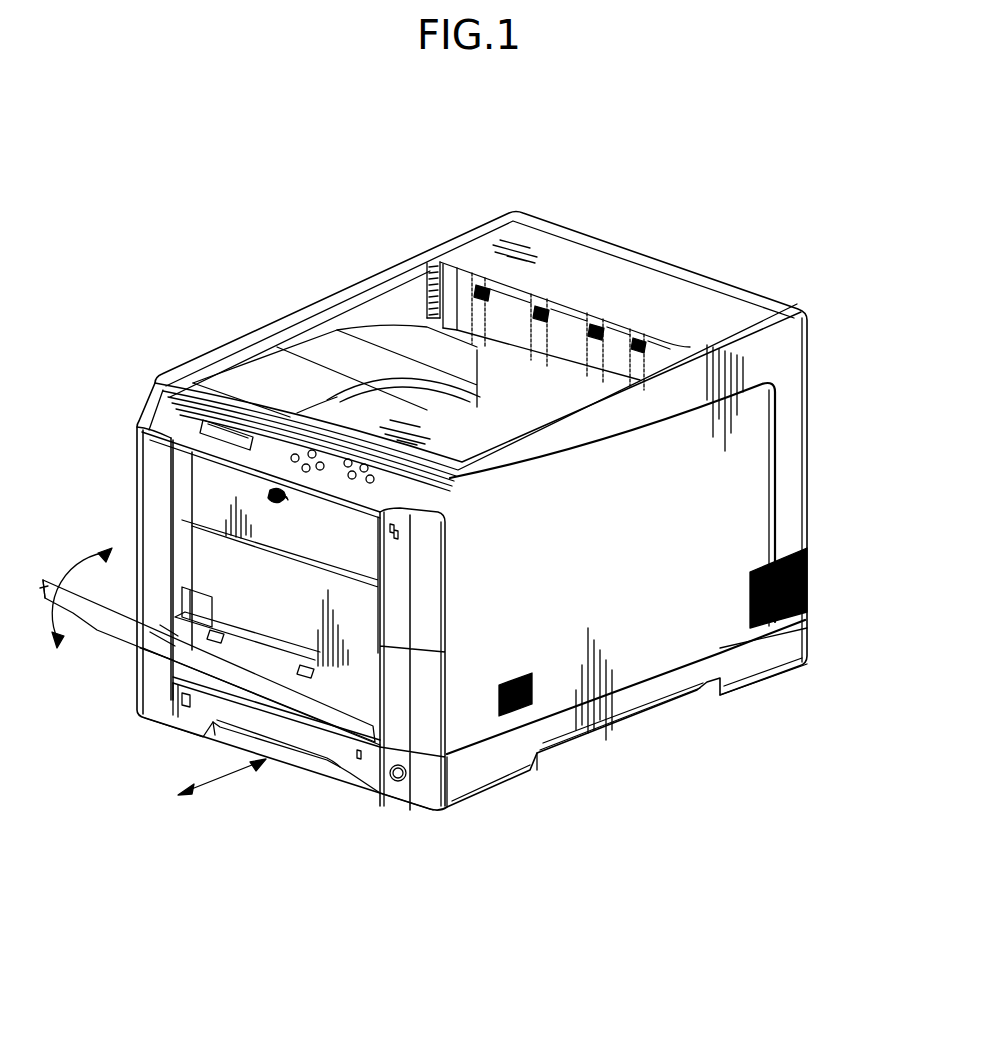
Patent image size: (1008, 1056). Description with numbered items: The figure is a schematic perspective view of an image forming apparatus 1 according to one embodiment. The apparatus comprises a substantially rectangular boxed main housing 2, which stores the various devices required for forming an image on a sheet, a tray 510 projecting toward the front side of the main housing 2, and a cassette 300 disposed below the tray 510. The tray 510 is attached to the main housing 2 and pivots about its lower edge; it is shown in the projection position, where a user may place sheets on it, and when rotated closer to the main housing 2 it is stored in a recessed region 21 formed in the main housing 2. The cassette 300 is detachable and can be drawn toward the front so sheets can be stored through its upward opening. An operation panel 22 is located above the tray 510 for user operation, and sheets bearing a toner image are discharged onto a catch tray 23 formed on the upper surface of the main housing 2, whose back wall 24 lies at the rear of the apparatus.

The image forming apparatus 1 is at (762, 194).
The main housing 2 is at (812, 496).
The recessed region 21 is at (200, 488).
The operation panel 22 is at (163, 412).
The catch tray 23 is at (400, 340).
The back wall 24 is at (812, 432).
The cassette 300 is at (325, 745).
The tray 510 is at (138, 633).